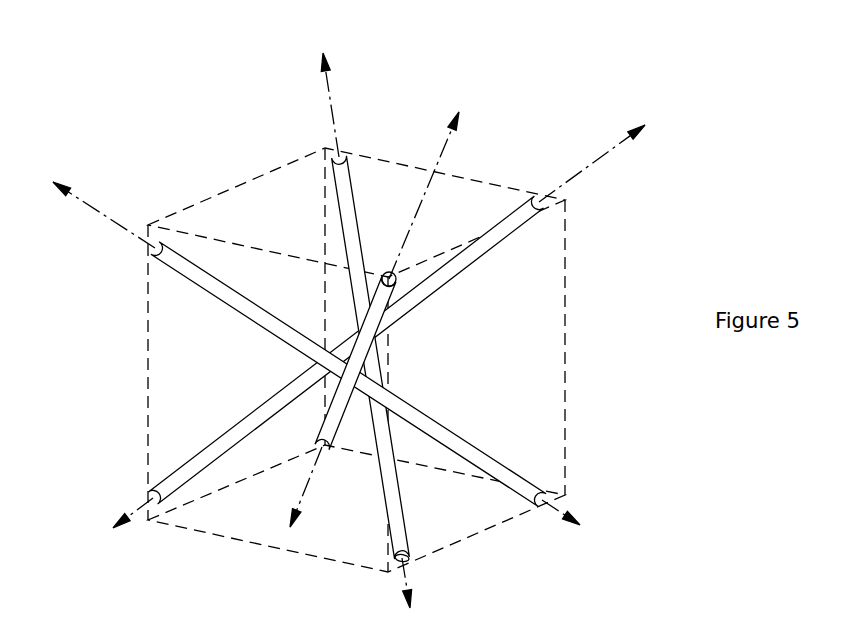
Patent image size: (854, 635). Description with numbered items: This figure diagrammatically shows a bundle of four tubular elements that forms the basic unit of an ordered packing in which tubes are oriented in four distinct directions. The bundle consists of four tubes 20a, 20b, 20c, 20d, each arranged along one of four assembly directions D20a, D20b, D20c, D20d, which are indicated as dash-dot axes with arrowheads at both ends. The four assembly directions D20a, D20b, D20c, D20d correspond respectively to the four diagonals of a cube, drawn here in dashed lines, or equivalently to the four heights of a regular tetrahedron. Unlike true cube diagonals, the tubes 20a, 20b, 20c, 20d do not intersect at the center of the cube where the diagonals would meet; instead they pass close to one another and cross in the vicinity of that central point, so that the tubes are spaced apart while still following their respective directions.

The tube 20a is at (400, 517).
The tube 20b is at (488, 460).
The tube 20c is at (330, 449).
The tube 20d is at (222, 440).
The assembly direction D20a is at (354, 317).
The assembly direction D20b is at (299, 339).
The assembly direction D20c is at (390, 303).
The assembly direction D20d is at (410, 315).